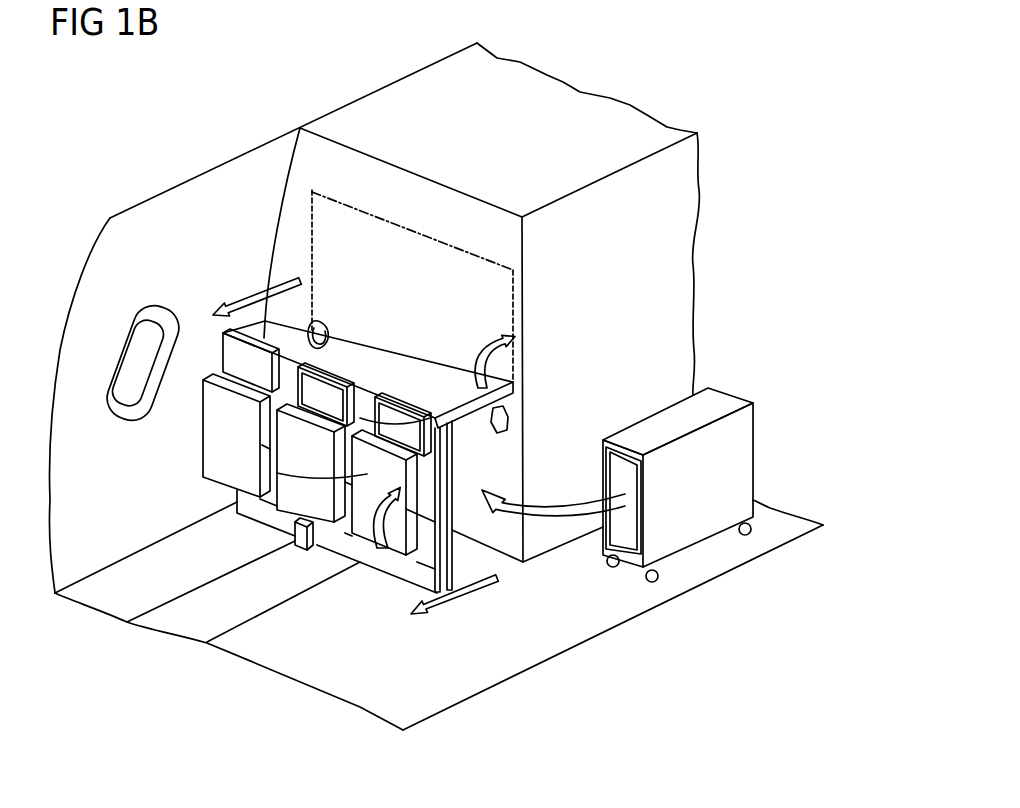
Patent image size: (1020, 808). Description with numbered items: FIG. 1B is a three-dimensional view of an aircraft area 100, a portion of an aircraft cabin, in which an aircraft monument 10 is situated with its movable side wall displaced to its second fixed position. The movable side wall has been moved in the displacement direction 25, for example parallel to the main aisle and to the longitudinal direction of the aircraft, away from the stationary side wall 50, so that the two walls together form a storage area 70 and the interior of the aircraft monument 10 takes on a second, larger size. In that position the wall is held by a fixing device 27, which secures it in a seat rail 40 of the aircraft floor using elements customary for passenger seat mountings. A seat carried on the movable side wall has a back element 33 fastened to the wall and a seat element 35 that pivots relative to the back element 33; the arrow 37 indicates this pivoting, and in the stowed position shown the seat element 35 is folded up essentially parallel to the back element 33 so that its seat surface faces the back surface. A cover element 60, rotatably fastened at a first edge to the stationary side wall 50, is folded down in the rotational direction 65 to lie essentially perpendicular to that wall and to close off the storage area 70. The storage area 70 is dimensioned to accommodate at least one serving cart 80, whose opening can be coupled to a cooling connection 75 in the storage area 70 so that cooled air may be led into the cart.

The aircraft monument 10 is at (607, 77).
The displacement direction 25 is at (248, 296).
The fixing device 27 is at (297, 548).
The back element 33 is at (285, 351).
The seat element 35 is at (310, 448).
The arrow 37 is at (395, 540).
The seat rail 40 is at (230, 630).
The stationary side wall 50 is at (300, 178).
The cover element 60 is at (410, 355).
The rotational direction 65 is at (487, 344).
The storage area 70 is at (477, 458).
The cooling connection 75 is at (318, 325).
The serving cart 80 is at (662, 426).
The aircraft area 100 is at (688, 702).